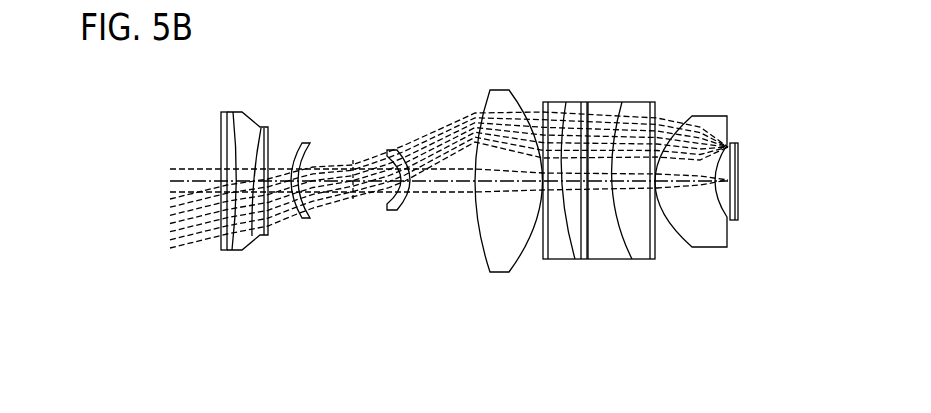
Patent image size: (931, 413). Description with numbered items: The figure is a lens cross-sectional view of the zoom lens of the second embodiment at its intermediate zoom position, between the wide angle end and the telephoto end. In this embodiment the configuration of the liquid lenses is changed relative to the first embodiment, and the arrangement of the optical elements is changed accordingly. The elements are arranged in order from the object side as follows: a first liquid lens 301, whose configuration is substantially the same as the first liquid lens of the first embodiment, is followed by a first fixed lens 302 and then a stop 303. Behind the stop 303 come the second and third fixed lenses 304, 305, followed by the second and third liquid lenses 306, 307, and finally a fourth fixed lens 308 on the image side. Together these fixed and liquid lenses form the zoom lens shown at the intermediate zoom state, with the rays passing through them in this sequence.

The first liquid lens 301 is at (233, 250).
The first fixed lens 302 is at (302, 220).
The stop 303 is at (347, 139).
The second fixed lens 304 is at (391, 213).
The third fixed lens 305 is at (497, 273).
The second liquid lens 306 is at (573, 261).
The third liquid lens 307 is at (633, 261).
The fourth fixed lens 308 is at (712, 114).